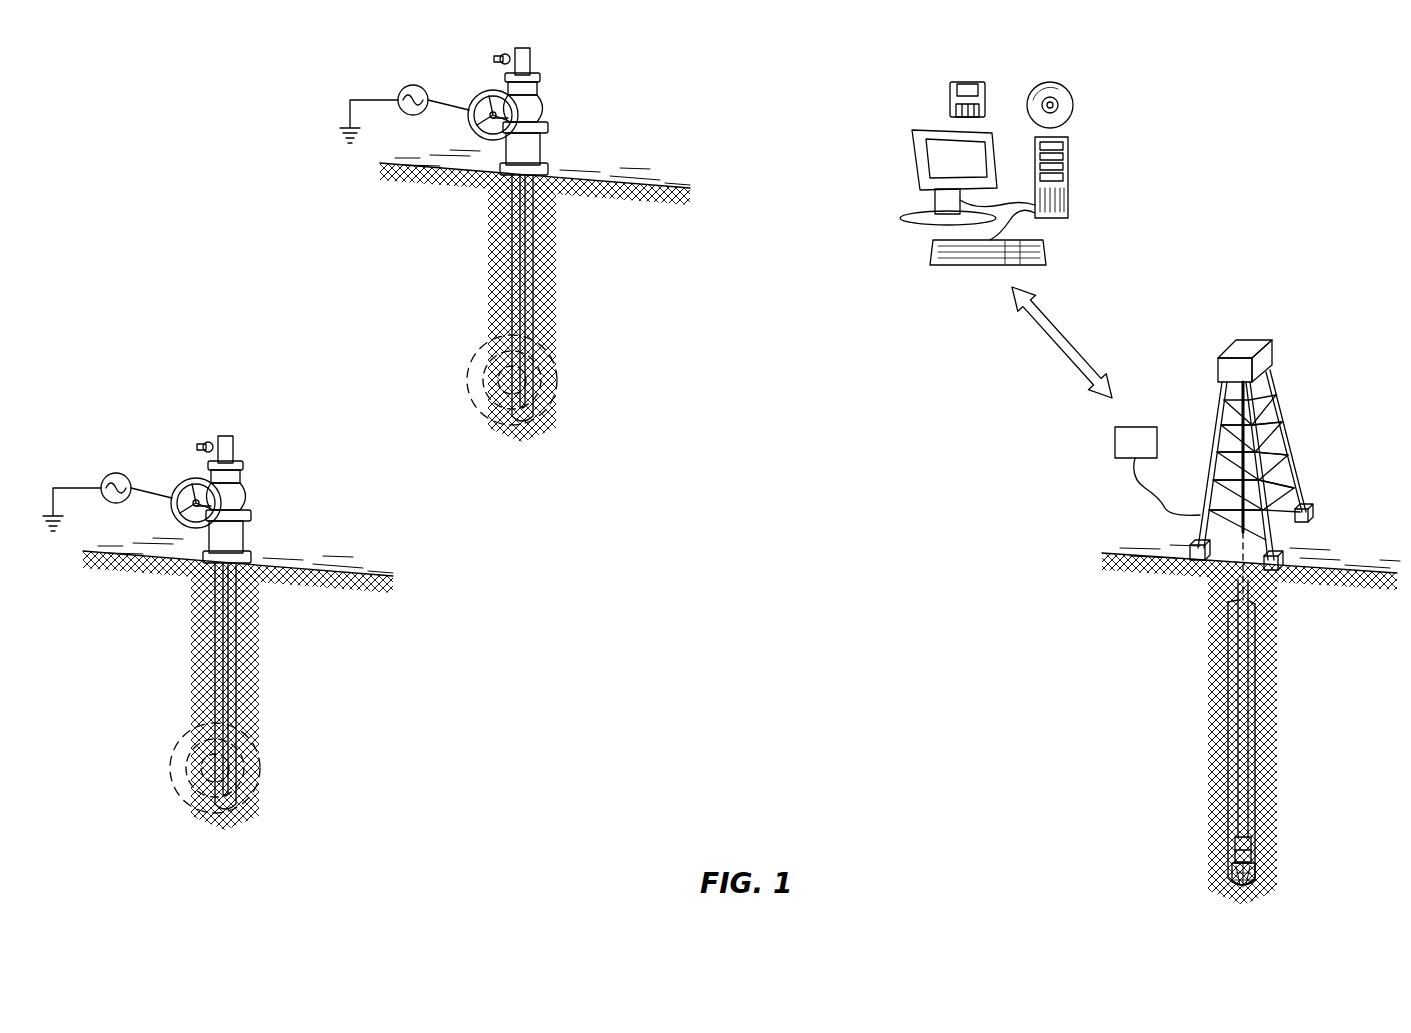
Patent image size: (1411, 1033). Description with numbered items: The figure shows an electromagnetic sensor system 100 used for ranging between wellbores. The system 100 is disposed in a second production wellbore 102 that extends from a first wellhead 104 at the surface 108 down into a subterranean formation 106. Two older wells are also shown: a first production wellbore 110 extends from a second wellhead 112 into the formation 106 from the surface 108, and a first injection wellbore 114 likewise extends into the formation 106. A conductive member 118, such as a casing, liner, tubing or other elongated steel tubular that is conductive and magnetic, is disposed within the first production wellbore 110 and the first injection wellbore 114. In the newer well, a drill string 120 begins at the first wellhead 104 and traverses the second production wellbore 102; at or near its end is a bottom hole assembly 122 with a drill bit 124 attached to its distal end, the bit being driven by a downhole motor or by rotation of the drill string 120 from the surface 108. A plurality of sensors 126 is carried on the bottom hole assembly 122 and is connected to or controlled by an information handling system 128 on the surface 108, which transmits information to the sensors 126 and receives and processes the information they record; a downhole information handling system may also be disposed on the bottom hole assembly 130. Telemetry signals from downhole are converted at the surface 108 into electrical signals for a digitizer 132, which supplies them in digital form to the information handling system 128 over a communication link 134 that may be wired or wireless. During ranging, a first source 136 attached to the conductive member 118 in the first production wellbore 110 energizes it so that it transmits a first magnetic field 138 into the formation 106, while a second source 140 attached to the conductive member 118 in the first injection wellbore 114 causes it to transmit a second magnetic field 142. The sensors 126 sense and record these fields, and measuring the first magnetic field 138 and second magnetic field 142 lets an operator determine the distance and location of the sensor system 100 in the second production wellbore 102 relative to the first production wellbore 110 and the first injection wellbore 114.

The electromagnetic sensor system 100 is at (1312, 860).
The second production wellbore 102 is at (1229, 682).
The first wellhead 104 is at (1277, 336).
The subterranean formation 106 is at (545, 278).
The surface 108 is at (585, 164).
The first production wellbore 110 is at (184, 686).
The second wellhead 112 is at (524, 48).
The first injection wellbore 114 is at (511, 300).
The conductive member 118 is at (519, 236).
The drill string 120 is at (1236, 626).
The bottom hole assembly 122 is at (1250, 846).
The drill bit 124 is at (1256, 878).
The plurality of sensors 126 is at (1236, 852).
The information handling system 128 is at (1036, 55).
The bottom hole assembly 130 is at (1238, 860).
The digitizer 132 is at (1115, 440).
The communication link 134 is at (1058, 325).
The first source 136 is at (107, 487).
The first magnetic field 138 is at (262, 770).
The second source 140 is at (413, 85).
The second magnetic field 142 is at (575, 398).